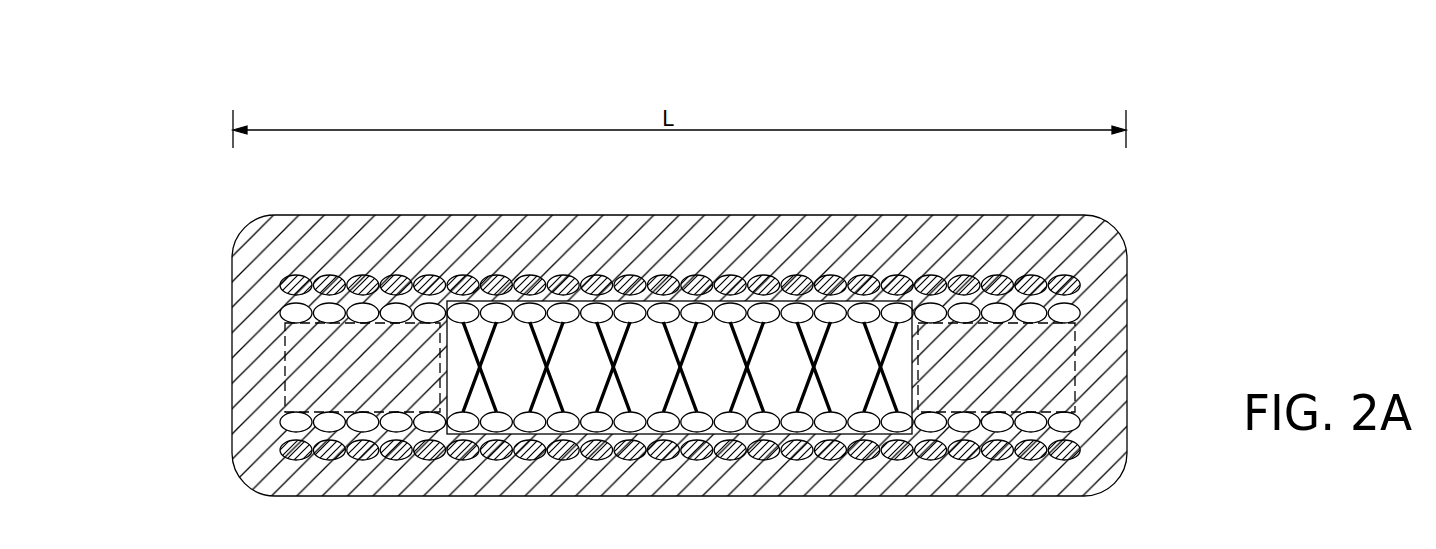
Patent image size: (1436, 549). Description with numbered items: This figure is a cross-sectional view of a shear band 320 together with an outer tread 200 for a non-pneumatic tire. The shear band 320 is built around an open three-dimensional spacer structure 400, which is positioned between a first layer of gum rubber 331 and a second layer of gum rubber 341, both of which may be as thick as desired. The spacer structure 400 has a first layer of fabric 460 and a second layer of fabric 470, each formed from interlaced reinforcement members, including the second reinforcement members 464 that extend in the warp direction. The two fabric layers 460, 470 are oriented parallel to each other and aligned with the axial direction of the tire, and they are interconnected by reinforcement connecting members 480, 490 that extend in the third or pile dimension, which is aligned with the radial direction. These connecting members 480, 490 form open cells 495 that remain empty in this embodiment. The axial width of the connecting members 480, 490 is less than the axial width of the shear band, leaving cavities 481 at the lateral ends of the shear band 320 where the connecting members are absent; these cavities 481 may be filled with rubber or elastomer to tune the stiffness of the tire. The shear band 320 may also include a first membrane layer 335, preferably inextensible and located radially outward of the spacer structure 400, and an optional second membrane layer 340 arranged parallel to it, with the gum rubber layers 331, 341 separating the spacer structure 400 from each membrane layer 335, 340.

The outer tread 200 is at (679, 322).
The shear band 320 is at (345, 205).
The first layer of gum rubber 331 is at (1040, 300).
The first membrane layer 335 is at (832, 262).
The second membrane layer 340 is at (914, 467).
The second layer of gum rubber 341 is at (1072, 437).
The three-dimensional spacer structure 400 is at (725, 288).
The first layer of fabric 460 is at (935, 295).
The second reinforcement members 464 is at (600, 318).
The second layer of fabric 470 is at (475, 432).
The reinforcement connecting member 480 is at (662, 328).
The cavities 481 is at (345, 376).
The reinforcement connecting member 490 is at (755, 338).
The open cells 495 is at (575, 358).